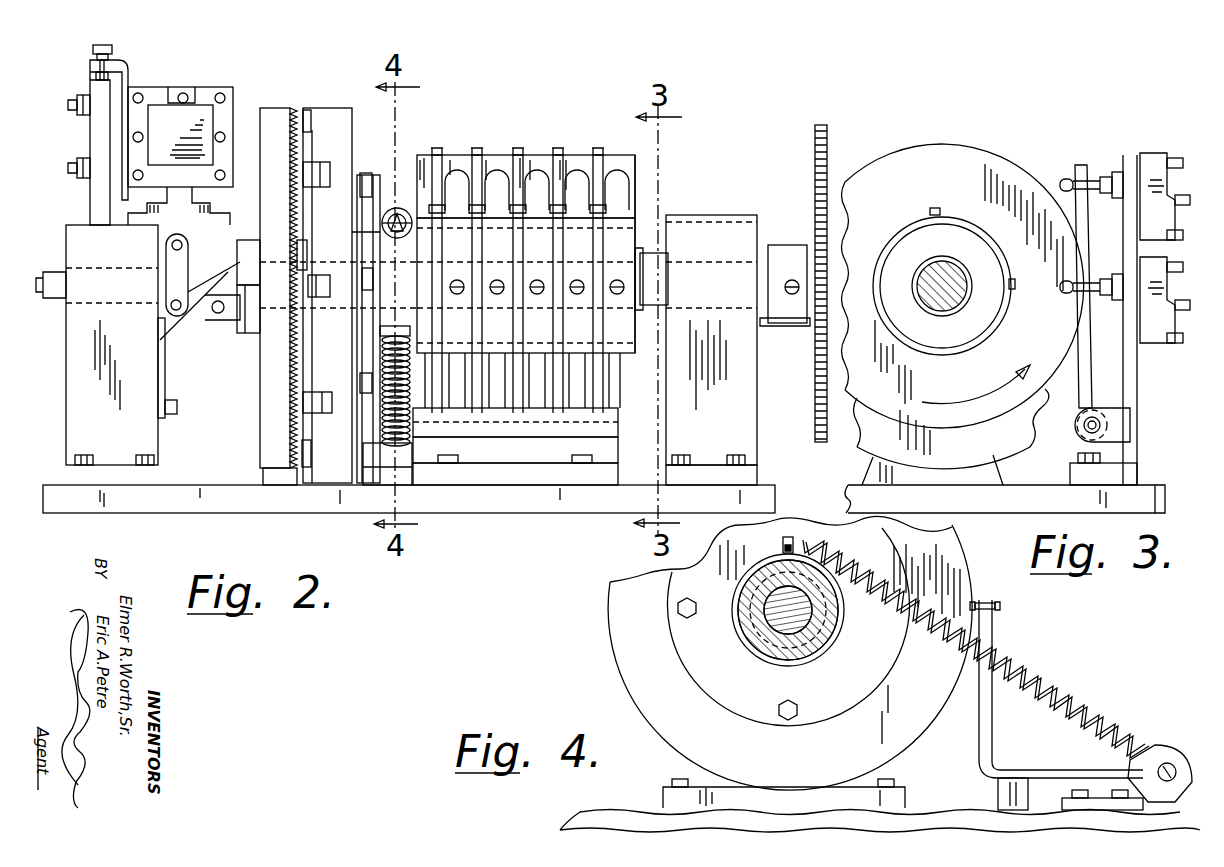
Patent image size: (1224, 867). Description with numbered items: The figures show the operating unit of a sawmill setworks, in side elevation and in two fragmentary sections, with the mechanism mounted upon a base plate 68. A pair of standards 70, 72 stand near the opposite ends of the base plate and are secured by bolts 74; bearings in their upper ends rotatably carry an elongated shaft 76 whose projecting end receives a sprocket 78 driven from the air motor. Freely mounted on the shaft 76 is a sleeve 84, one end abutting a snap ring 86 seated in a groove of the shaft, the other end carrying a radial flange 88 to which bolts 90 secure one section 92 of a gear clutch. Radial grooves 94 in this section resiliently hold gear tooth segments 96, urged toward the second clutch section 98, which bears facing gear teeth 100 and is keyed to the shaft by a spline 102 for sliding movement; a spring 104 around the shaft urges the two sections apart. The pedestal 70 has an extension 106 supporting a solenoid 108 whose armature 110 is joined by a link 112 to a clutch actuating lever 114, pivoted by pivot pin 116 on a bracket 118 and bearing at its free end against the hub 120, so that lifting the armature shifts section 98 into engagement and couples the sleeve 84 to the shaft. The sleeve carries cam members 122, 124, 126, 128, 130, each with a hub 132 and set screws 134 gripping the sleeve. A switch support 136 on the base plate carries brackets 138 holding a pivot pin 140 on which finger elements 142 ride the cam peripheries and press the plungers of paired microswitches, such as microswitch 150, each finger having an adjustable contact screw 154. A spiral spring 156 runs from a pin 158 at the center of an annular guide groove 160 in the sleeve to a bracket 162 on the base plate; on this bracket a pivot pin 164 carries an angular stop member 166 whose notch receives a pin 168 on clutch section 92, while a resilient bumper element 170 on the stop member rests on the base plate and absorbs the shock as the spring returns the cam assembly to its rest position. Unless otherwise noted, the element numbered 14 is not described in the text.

In FIG. 2, the bolts 14 is at (136, 455).
In FIG. 2, the base plate 68 is at (550, 508).
In FIG. 3, the base plate 68 is at (1156, 498).
In FIG. 4, the base plate 68 is at (583, 812).
In FIG. 2, the standard 70 is at (74, 380).
In FIG. 3, the standard 70 is at (882, 470).
In FIG. 4, the standard 70 is at (662, 790).
In FIG. 2, the standard 72 is at (755, 391).
In FIG. 2, the bolts 74 is at (735, 454).
In FIG. 4, the bolts 74 is at (675, 778).
In FIG. 2, the shaft 76 is at (774, 246).
In FIG. 3, the shaft 76 is at (940, 306).
In FIG. 4, the shaft 76 is at (772, 632).
In FIG. 2, the sprocket 78 is at (822, 124).
In FIG. 2, the sleeve 84 is at (622, 342).
In FIG. 3, the sleeve 84 is at (958, 344).
In FIG. 4, the sleeve 84 is at (820, 650).
In FIG. 2, the snap ring 86 is at (646, 312).
In FIG. 3, the snap ring 86 is at (946, 258).
In FIG. 2, the flange 88 is at (356, 173).
In FIG. 4, the flange 88 is at (878, 686).
In FIG. 2, the bolts 90 is at (368, 180).
In FIG. 4, the bolts 90 is at (676, 606).
In FIG. 2, the clutch section 92 is at (336, 107).
In FIG. 3, the clutch section 92 is at (858, 478).
In FIG. 4, the clutch section 92 is at (602, 652).
In FIG. 2, the grooves 94 is at (322, 176).
In FIG. 2, the gear tooth segments 96 is at (310, 158).
In FIG. 2, the clutch section 98 is at (276, 107).
In FIG. 2, the gear teeth 100 is at (292, 152).
In FIG. 2, the spline 102 is at (246, 332).
In FIG. 2, the spring 104 is at (306, 260).
In FIG. 2, the extension 106 is at (90, 192).
In FIG. 2, the solenoid 108 is at (191, 128).
In FIG. 2, the armature 110 is at (182, 210).
In FIG. 2, the link 112 is at (180, 252).
In FIG. 2, the clutch actuating lever 114 is at (180, 344).
In FIG. 2, the pivot pin 116 is at (199, 318).
In FIG. 2, the bracket 118 is at (166, 354).
In FIG. 2, the hub 120 is at (240, 240).
In FIG. 2, the cam member 122 is at (434, 148).
In FIG. 2, the cam member 124 is at (476, 149).
In FIG. 2, the cam member 126 is at (518, 148).
In FIG. 2, the cam member 128 is at (558, 148).
In FIG. 2, the cam member 130 is at (598, 148).
In FIG. 3, the cam member 130 is at (990, 150).
In FIG. 2, the hub 132 is at (624, 360).
In FIG. 3, the hub 132 is at (996, 322).
In FIG. 2, the set screws 134 is at (578, 278).
In FIG. 3, the set screws 134 is at (930, 210).
In FIG. 2, the switch support 136 is at (497, 476).
In FIG. 3, the switch support 136 is at (1126, 462).
In FIG. 3, the brackets 138 is at (1114, 422).
In FIG. 2, the pivot pin 140 is at (617, 428).
In FIG. 3, the pivot pin 140 is at (1082, 432).
In FIG. 2, the finger elements 142 is at (608, 176).
In FIG. 3, the finger elements 142 is at (1080, 388).
In FIG. 3, the microswitch 150 is at (1156, 334).
In FIG. 3, the adjustable contact screw 154 is at (1068, 179).
In FIG. 2, the spiral spring 156 is at (398, 334).
In FIG. 4, the spiral spring 156 is at (1018, 672).
In FIG. 2, the pin 158 is at (398, 234).
In FIG. 4, the pin 158 is at (782, 542).
In FIG. 2, the annular guide groove 160 is at (384, 226).
In FIG. 4, the annular guide groove 160 is at (736, 641).
In FIG. 4, the bracket 162 is at (1172, 746).
In FIG. 4, the pivot pin 164 is at (1161, 762).
In FIG. 4, the stop member 166 is at (1024, 754).
In FIG. 4, the pin 168 is at (997, 606).
In FIG. 4, the bumper element 170 is at (996, 792).